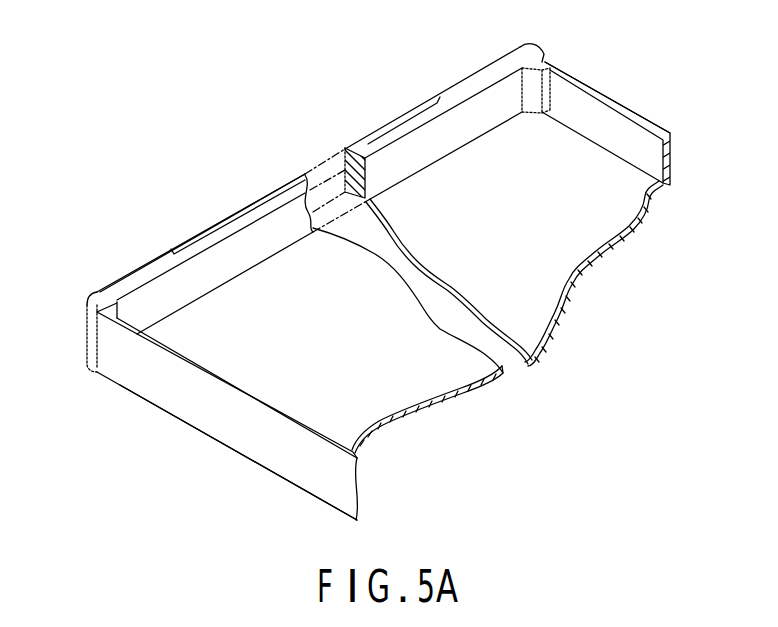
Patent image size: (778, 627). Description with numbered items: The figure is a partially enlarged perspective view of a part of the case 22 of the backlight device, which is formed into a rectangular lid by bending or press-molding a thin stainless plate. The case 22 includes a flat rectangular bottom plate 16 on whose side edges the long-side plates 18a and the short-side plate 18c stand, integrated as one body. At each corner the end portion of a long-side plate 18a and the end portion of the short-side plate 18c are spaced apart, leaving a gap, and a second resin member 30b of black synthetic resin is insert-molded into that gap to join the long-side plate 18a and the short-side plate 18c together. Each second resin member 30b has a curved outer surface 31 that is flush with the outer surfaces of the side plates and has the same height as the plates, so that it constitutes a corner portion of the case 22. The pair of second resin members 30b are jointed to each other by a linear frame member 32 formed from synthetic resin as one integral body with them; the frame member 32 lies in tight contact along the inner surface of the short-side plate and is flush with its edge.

The bottom plate 16 is at (447, 380).
The long-side plate 18a is at (621, 104).
The short-side plate 18c is at (218, 220).
The case 22 is at (238, 458).
The second resin member 30b is at (497, 60).
The curved outer surface 31 is at (540, 46).
The frame member 32 is at (420, 156).